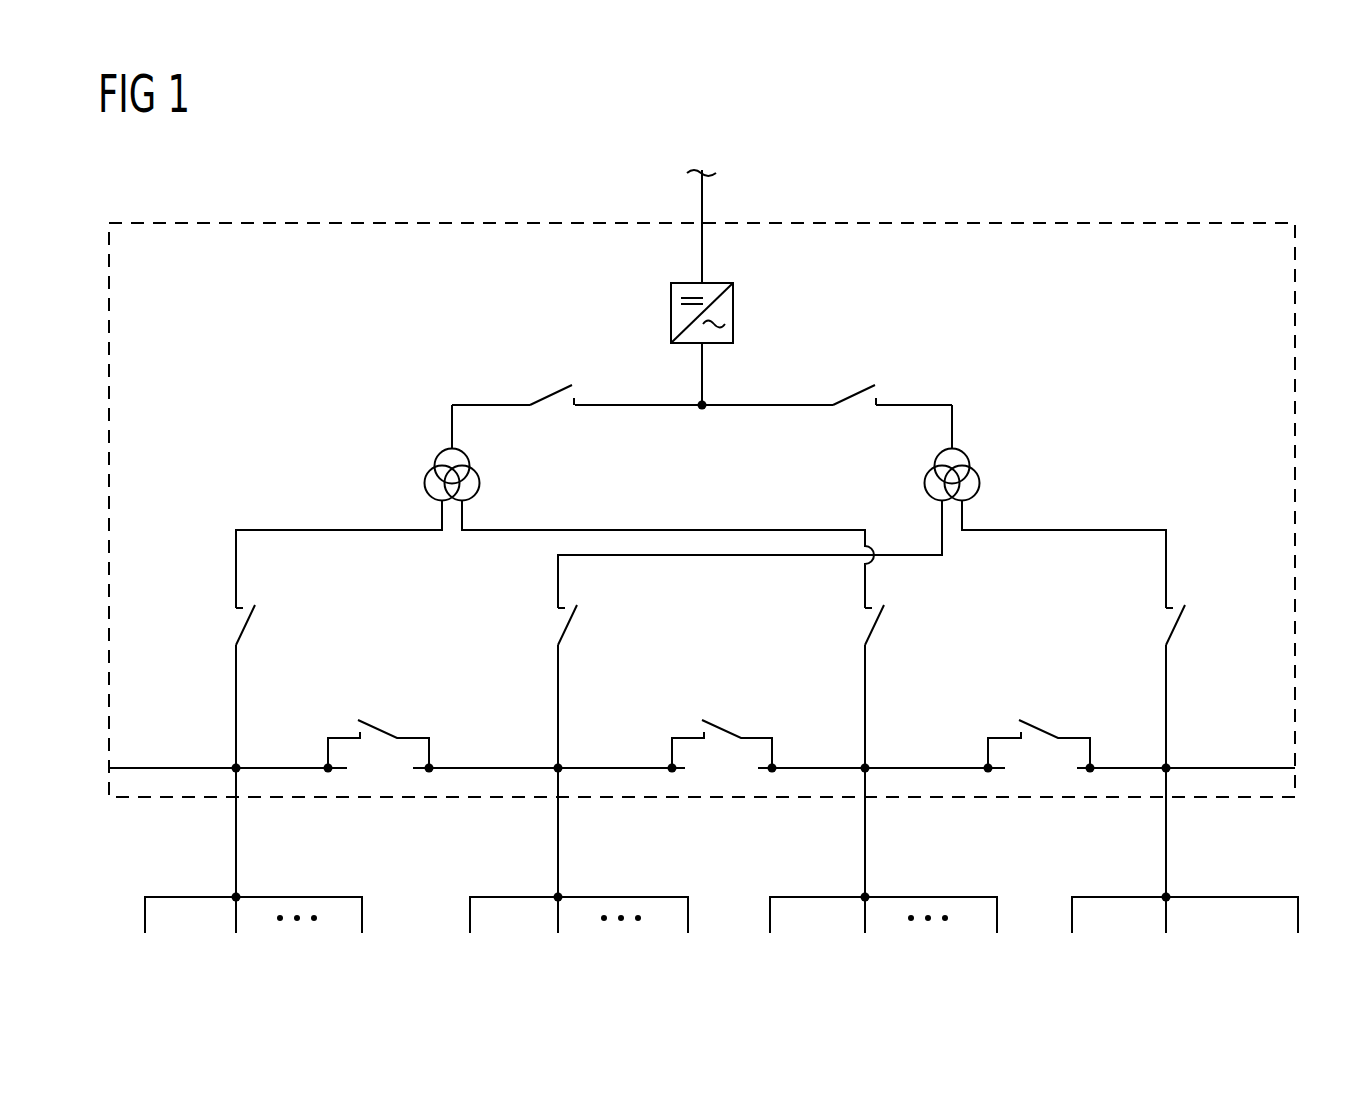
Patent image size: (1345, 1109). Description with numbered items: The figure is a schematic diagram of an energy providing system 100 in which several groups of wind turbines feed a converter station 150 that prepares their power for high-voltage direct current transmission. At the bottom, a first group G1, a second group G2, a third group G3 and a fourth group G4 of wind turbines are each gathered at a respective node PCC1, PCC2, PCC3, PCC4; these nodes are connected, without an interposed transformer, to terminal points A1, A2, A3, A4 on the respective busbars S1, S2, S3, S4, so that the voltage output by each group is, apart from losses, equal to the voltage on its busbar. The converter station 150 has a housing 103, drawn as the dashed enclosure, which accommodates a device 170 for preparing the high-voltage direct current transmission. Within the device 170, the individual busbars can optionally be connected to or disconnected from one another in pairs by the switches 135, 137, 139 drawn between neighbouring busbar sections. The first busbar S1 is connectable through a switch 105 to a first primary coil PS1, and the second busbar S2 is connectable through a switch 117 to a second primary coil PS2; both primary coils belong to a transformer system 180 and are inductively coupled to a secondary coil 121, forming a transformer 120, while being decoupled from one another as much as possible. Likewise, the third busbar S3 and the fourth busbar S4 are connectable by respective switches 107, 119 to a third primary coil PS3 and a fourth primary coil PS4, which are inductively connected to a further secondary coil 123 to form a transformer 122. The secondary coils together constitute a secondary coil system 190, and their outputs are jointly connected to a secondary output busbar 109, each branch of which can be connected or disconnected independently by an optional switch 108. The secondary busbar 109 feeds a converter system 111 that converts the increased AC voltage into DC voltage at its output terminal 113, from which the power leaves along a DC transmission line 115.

The energy providing system 100 is at (1262, 182).
The housing 103 is at (702, 475).
The switch 105 is at (250, 627).
The switch 107 is at (573, 627).
The switch 108 is at (560, 396).
The secondary output busbar 109 is at (490, 404).
The converter system 111 is at (733, 312).
The output terminal 113 is at (702, 284).
The DC transmission line 115 is at (702, 212).
The switch 117 is at (879, 627).
The switch 119 is at (1180, 627).
The transformer 120 is at (376, 438).
The secondary coil 121 is at (441, 455).
The transformer 122 is at (1074, 440).
The secondary coil 123 is at (962, 455).
The switch 135 is at (377, 727).
The switch 137 is at (717, 727).
The switch 139 is at (1037, 727).
The converter station 150 is at (286, 193).
The device for preparing a high-voltage direct current transmission 170 is at (1188, 484).
The transformer system 180 is at (330, 445).
The secondary coil system 190 is at (1026, 446).
The first primary coil PS1 is at (425, 485).
The second primary coil PS2 is at (479, 485).
The third primary coil PS3 is at (925, 485).
The fourth primary coil PS4 is at (980, 485).
The first busbar S1 is at (180, 767).
The second busbar S2 is at (946, 767).
The third busbar S3 is at (482, 767).
The fourth busbar S4 is at (1119, 767).
The terminal point A1 is at (239, 766).
The terminal point A2 is at (868, 766).
The terminal point A3 is at (561, 766).
The terminal point A4 is at (1169, 766).
The first group G1 is at (185, 874).
The second group G2 is at (835, 874).
The third group G3 is at (507, 874).
The fourth group G4 is at (1137, 874).
The node PCC1 is at (239, 896).
The node PCC2 is at (868, 896).
The node PCC3 is at (561, 896).
The node PCC4 is at (1169, 896).